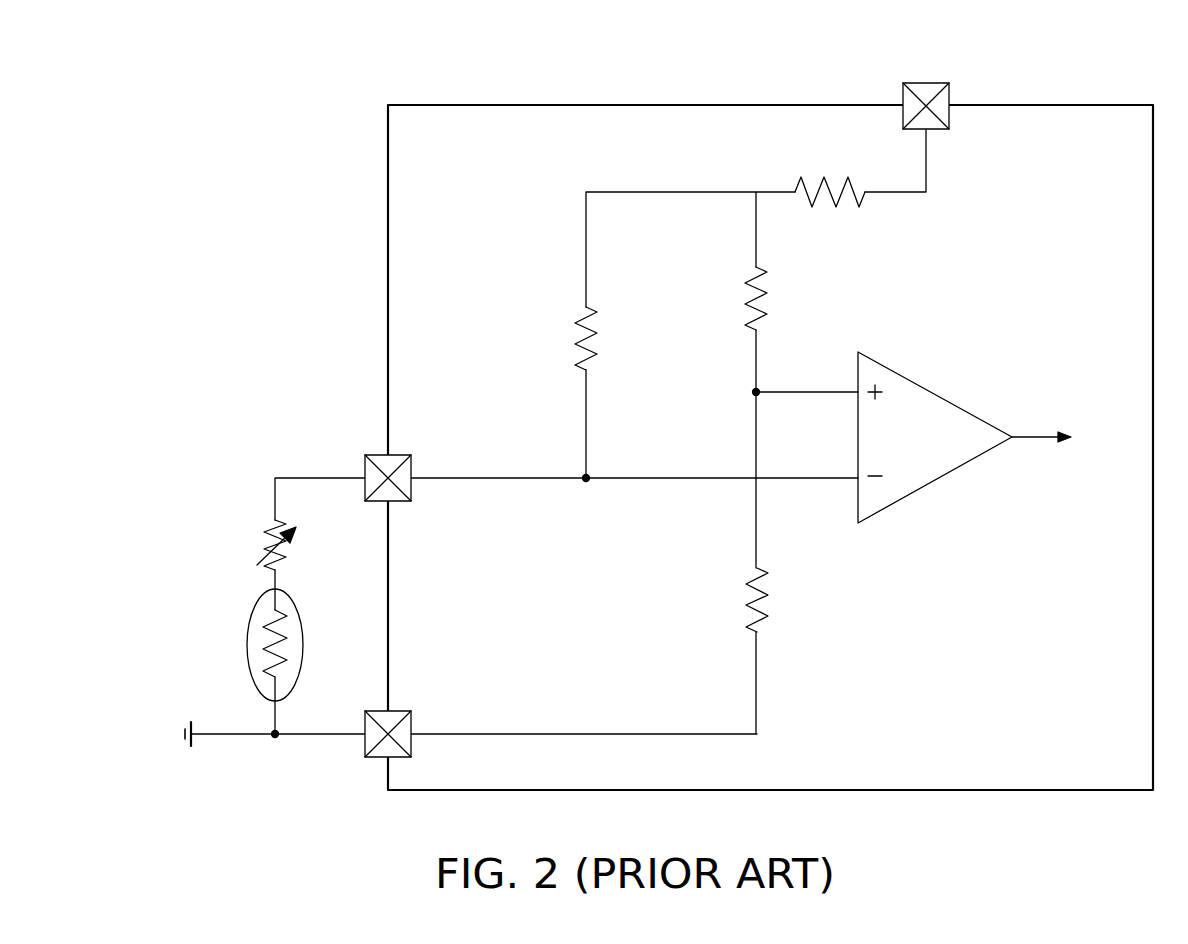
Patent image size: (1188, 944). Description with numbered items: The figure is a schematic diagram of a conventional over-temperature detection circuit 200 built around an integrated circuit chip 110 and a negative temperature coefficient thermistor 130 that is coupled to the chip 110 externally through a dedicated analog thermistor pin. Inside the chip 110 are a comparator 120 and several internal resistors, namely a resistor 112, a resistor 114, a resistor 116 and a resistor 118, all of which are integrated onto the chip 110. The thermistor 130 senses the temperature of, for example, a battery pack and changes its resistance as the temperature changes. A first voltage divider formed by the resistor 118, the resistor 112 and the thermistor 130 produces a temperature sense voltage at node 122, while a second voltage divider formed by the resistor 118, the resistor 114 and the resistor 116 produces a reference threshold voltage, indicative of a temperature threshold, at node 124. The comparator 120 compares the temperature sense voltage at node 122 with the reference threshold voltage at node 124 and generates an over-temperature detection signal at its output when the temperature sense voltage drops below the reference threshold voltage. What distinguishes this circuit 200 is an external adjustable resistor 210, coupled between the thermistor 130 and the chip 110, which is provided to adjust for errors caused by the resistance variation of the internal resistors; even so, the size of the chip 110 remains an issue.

The over-temperature detection circuit 200 is at (272, 116).
The integrated circuit chip 110 is at (417, 105).
The resistor 112 is at (582, 318).
The resistor 114 is at (763, 293).
The resistor 116 is at (763, 590).
The resistor 118 is at (826, 182).
The comparator 120 is at (956, 405).
The node 122 is at (586, 480).
The node 124 is at (756, 392).
The negative temperature coefficient thermistor 130 is at (253, 612).
The external adjustable resistor 210 is at (277, 525).